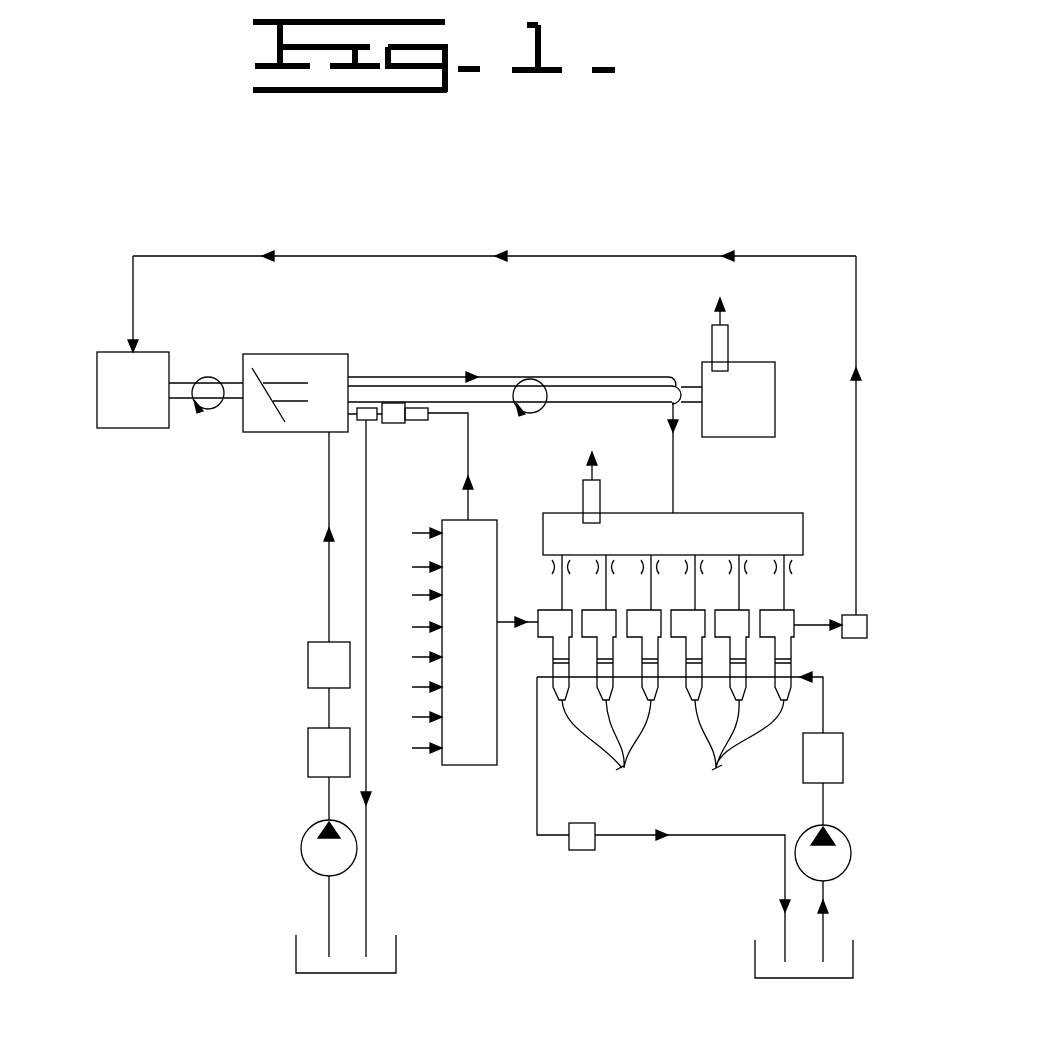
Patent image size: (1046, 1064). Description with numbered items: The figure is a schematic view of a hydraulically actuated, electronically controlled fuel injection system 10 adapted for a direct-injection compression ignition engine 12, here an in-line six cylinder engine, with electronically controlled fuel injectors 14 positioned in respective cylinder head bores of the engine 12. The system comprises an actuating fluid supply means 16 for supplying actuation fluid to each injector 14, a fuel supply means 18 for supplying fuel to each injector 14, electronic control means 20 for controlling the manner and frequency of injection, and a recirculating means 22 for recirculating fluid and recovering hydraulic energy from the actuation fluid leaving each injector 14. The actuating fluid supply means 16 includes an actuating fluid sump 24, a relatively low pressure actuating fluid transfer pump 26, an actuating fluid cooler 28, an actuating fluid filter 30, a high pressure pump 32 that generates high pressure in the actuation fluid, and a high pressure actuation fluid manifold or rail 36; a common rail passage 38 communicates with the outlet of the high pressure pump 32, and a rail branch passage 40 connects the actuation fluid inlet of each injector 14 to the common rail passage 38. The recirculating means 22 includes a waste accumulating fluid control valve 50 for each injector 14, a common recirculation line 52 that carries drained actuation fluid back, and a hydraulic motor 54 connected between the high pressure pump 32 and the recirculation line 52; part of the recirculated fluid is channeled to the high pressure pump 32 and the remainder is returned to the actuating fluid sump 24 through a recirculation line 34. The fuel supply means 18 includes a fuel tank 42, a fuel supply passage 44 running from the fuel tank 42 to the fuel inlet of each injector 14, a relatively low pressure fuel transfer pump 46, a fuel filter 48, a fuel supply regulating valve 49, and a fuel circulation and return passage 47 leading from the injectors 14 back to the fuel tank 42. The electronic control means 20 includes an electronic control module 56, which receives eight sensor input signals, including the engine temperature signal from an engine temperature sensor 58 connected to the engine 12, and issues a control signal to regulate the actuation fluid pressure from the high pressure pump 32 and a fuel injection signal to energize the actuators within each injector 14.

The fuel injection system 10 is at (300, 210).
The engine 12 is at (752, 409).
The fuel injectors 14 is at (666, 696).
The actuating fluid supply means 16 is at (358, 1007).
The fuel supply means 18 is at (800, 1000).
The electronic control means 20 is at (470, 779).
The recirculating means 22 is at (106, 260).
The actuating fluid sump 24 is at (396, 950).
The actuating fluid transfer pump 26 is at (308, 850).
The actuating fluid cooler 28 is at (308, 745).
The actuating fluid filter 30 is at (308, 676).
The high pressure pump 32 is at (278, 433).
The recirculation line 34 is at (366, 862).
The high pressure actuation fluid manifold or rail 36 is at (719, 505).
The common rail passage 38 is at (574, 513).
The rail branch passage 40 is at (784, 588).
The fuel tank 42 is at (755, 958).
The fuel supply passage 44 is at (823, 697).
The fuel transfer pump 46 is at (846, 842).
The fuel circulation and return passage 47 is at (785, 880).
The fuel filter 48 is at (843, 760).
The fuel supply regulating valve 49 is at (581, 838).
The waste accumulating fluid control valve 50 is at (867, 627).
The common recirculation line 52 is at (614, 256).
The hydraulic motor 54 is at (147, 404).
The electronic control module 56 is at (483, 641).
The engine temperature sensor 58 is at (728, 338).